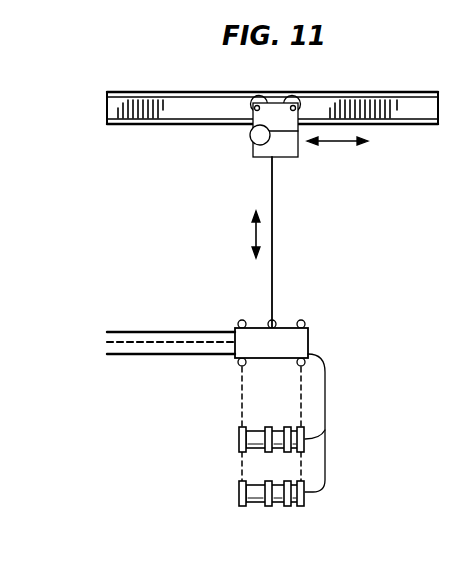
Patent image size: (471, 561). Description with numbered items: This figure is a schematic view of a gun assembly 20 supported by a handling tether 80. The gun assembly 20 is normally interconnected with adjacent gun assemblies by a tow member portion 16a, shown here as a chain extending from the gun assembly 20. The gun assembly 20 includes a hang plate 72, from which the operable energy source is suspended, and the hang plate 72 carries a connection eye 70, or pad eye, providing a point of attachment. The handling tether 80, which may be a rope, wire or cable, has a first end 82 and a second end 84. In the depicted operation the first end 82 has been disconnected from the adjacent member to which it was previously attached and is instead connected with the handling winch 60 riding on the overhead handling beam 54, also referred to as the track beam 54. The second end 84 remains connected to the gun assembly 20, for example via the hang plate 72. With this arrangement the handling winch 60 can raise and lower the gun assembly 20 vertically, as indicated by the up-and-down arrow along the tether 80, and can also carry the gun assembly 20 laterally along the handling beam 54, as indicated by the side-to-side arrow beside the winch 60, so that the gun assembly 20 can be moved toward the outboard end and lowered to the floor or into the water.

The handling beam 54 is at (168, 91).
The handling winch 60 is at (242, 151).
The first end 82 is at (298, 155).
The handling tether 80 is at (273, 228).
The second end 84 is at (282, 312).
The connection eye 70 is at (260, 313).
The hang plate 72 is at (300, 343).
The tow member portion 16a is at (145, 341).
The gun assembly 20 is at (238, 438).